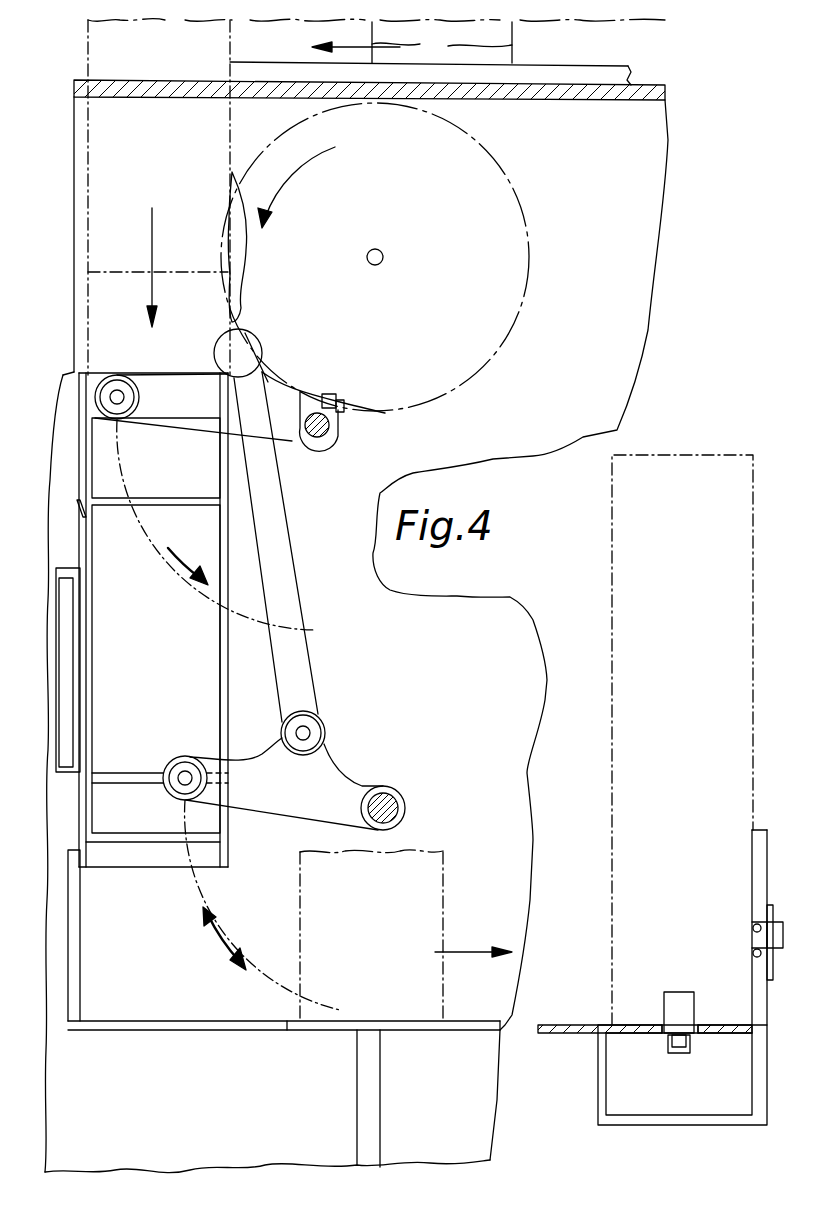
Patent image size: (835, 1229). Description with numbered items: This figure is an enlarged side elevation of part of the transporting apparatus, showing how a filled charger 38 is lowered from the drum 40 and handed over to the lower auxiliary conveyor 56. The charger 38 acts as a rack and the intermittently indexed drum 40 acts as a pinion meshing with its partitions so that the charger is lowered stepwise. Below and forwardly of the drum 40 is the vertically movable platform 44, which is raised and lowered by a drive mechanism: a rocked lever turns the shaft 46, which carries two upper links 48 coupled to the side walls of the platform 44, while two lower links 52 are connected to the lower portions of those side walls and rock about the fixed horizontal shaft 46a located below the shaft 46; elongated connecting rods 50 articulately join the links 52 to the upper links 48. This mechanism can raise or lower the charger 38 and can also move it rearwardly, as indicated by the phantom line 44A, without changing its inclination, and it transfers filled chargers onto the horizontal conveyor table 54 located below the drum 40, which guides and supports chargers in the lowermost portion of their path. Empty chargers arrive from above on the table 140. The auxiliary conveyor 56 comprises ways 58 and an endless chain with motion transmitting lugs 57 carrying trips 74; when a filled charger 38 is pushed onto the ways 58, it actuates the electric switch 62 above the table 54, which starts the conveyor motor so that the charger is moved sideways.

The table 140 is at (536, 73).
The charger 38 is at (290, 918).
The drum 40 is at (503, 175).
The upper link 48 is at (187, 425).
The platform 44 is at (85, 750).
The phantom line 44A is at (330, 1003).
The connecting rod 50 is at (291, 590).
The shaft 46 is at (327, 436).
The lower link 52 is at (328, 776).
The fixed horizontal shaft 46a is at (396, 801).
The conveyor table 54 is at (460, 1030).
The ways 58 is at (707, 1033).
The motion transmitting lug 57 is at (686, 1010).
The lower auxiliary conveyor 56 is at (676, 1030).
The trip 74 is at (684, 1048).
The electric switch 62 is at (770, 936).